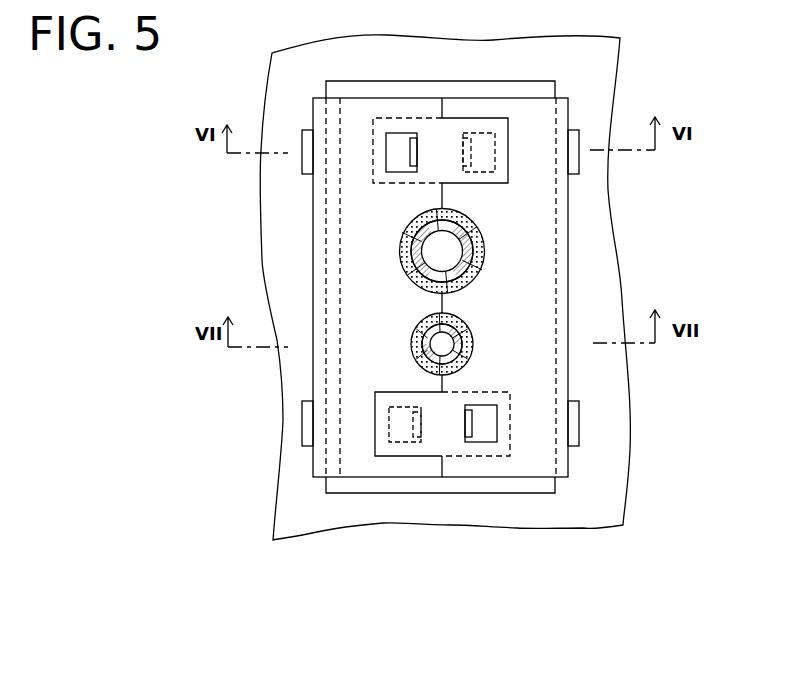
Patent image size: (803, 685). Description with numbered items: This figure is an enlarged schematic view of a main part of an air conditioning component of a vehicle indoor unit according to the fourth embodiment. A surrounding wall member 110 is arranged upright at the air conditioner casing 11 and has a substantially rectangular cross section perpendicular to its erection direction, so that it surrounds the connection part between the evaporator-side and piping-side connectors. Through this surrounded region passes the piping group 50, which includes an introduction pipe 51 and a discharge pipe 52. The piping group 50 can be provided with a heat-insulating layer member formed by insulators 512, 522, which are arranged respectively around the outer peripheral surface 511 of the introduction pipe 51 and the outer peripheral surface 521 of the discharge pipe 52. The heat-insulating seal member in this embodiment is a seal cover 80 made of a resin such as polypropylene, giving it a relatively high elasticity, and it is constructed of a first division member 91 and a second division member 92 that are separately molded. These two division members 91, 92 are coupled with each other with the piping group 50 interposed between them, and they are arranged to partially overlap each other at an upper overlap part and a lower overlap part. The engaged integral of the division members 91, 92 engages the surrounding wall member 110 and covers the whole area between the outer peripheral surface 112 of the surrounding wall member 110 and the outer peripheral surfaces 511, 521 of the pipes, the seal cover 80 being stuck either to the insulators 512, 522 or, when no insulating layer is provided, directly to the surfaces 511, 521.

The air conditioner casing 11 is at (297, 70).
The surrounding wall member 110 is at (400, 88).
The outer peripheral surface of the surrounding wall member 112 is at (327, 272).
The piping group 50 is at (569, 311).
The introduction pipe 51 is at (549, 234).
The discharge pipe 52 is at (556, 341).
The outer peripheral surface of the discharge pipe 521 is at (471, 215).
The insulator 522 is at (477, 225).
The insulator 512 is at (472, 346).
The outer peripheral surface of the introduction pipe 511 is at (467, 370).
The seal cover 80 is at (440, 367).
The first division member 91 is at (363, 470).
The second division member 92 is at (535, 457).